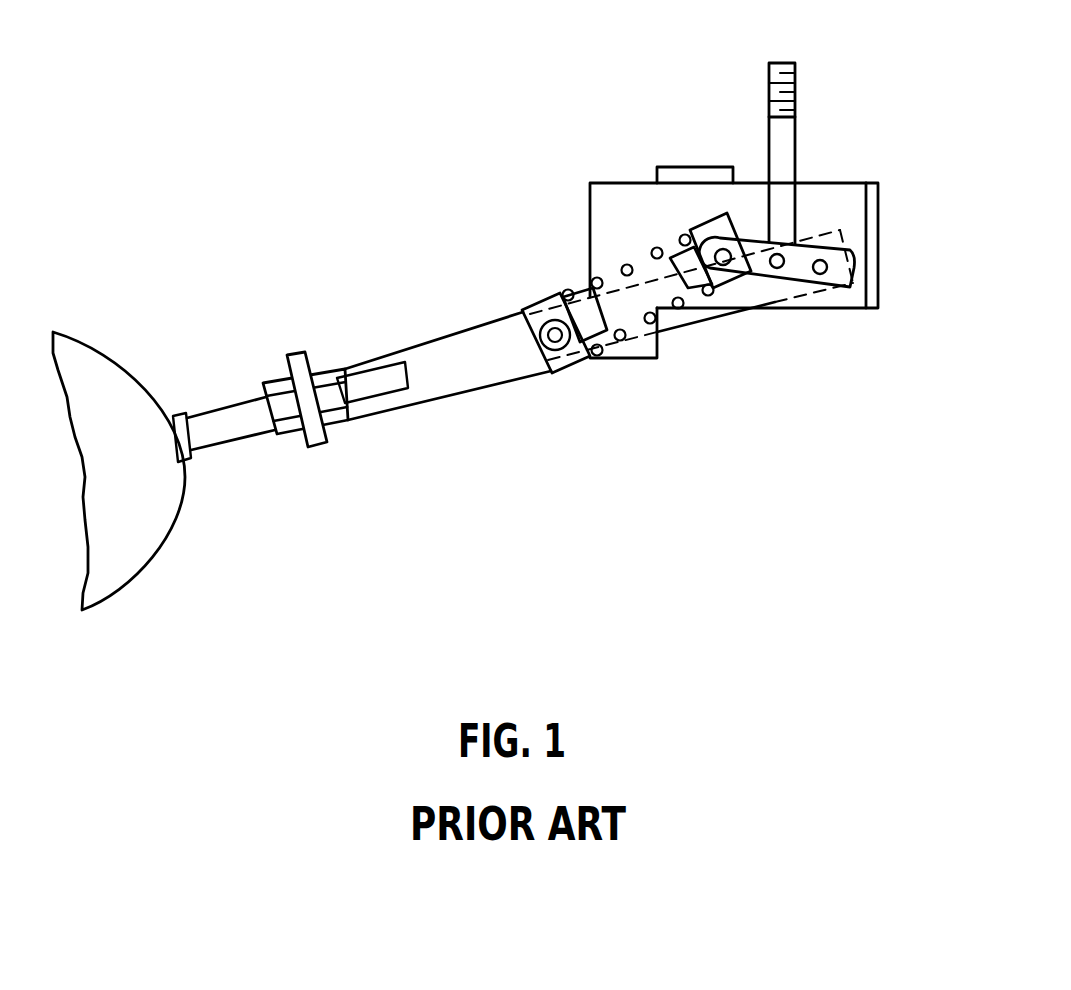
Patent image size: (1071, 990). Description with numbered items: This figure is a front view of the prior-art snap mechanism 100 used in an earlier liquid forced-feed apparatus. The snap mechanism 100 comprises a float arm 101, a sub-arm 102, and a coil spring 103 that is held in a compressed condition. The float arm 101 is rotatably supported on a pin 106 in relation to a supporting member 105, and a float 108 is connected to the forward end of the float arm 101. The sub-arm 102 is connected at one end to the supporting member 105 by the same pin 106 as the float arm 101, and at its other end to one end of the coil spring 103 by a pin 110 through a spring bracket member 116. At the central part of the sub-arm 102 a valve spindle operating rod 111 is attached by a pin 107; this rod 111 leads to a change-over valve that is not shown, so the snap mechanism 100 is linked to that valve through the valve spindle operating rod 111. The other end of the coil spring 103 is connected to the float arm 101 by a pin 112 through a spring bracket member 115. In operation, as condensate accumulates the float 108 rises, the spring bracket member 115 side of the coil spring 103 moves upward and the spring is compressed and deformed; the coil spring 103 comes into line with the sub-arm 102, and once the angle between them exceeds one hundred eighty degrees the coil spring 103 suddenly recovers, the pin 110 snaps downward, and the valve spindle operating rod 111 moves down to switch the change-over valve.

The snap mechanism 100 is at (838, 146).
The float arm 101 is at (437, 353).
The sub-arm 102 is at (797, 270).
The coil spring 103 is at (613, 339).
The supporting member 105 is at (628, 188).
The pin 106 is at (823, 275).
The pin 107 is at (772, 268).
The float 108 is at (98, 368).
The pin 110 is at (723, 268).
The valve spindle operating rod 111 is at (773, 142).
The pin 112 is at (543, 347).
The spring bracket member 115 is at (563, 292).
The spring bracket member 116 is at (714, 230).